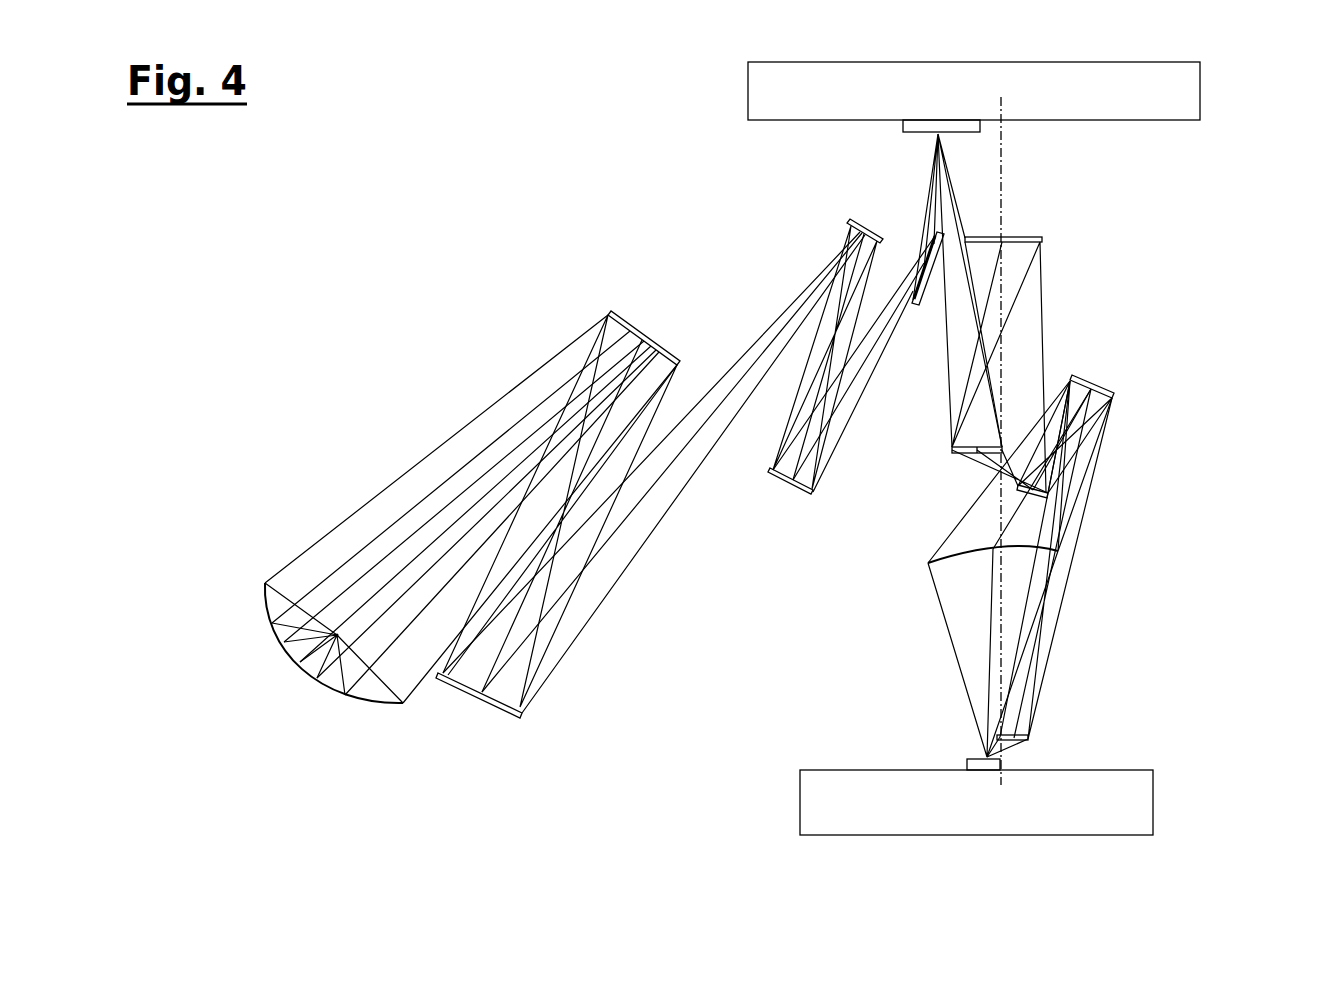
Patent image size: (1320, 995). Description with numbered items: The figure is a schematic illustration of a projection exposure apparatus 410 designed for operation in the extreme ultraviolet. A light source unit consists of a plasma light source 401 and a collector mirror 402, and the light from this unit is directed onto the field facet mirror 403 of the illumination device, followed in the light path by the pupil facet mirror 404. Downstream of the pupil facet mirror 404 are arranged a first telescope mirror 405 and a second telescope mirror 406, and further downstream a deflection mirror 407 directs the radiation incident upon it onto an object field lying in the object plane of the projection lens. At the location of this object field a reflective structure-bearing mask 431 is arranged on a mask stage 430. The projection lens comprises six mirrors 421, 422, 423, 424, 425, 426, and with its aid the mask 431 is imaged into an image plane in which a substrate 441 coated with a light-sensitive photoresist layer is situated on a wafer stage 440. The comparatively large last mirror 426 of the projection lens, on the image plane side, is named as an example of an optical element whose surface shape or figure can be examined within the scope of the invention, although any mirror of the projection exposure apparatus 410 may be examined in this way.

The plasma light source 401 is at (337, 633).
The collector mirror 402 is at (303, 680).
The field facet mirror 403 is at (640, 322).
The pupil facet mirror 404 is at (462, 705).
The first telescope mirror 405 is at (870, 237).
The second telescope mirror 406 is at (787, 480).
The deflection mirror 407 is at (930, 283).
The projection exposure apparatus 410 is at (668, 154).
The mirror of the projection lens 421 is at (970, 453).
The mirror of the projection lens 422 is at (1025, 235).
The mirror of the projection lens 423 is at (1022, 494).
The mirror of the projection lens 424 is at (1097, 383).
The mirror of the projection lens 425 is at (1028, 737).
The last mirror of the projection lens 426 is at (957, 560).
The mask stage 430 is at (1157, 93).
The reflective structure-bearing mask 431 is at (903, 125).
The wafer stage 440 is at (1110, 805).
The substrate 441 is at (967, 765).